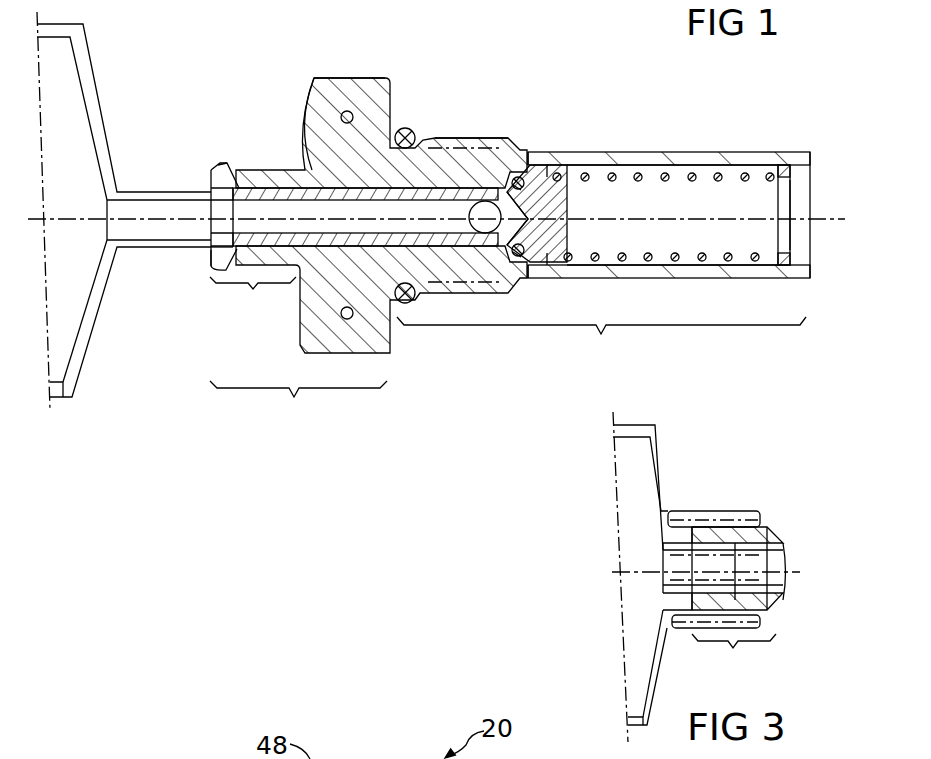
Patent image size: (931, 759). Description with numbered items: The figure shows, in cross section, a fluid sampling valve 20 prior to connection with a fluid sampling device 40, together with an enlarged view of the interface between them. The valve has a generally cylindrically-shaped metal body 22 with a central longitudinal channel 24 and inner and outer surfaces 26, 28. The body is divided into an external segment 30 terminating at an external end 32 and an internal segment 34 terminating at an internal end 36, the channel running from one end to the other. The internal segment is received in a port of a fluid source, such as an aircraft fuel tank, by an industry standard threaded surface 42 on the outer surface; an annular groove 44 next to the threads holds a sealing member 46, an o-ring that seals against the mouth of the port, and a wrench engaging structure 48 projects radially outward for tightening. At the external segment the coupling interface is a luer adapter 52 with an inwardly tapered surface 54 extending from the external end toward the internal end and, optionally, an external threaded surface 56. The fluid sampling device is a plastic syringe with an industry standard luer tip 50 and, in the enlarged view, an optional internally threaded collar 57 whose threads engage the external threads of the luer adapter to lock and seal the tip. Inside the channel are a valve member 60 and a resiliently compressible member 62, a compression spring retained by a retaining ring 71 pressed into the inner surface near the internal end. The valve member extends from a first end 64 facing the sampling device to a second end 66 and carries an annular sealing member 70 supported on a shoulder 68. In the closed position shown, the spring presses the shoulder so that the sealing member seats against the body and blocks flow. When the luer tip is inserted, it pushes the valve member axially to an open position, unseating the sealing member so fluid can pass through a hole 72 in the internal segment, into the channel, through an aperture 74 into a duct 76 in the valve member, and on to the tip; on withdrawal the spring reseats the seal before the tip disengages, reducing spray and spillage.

In FIG. 1, the fluid sampling valve 20 is at (523, 76).
In FIG. 1, the body 22 is at (293, 162).
In FIG. 1, the central longitudinal channel 24 is at (654, 184).
In FIG. 1, the inner surface 26 is at (587, 172).
In FIG. 1, the outer surface 28 is at (648, 152).
In FIG. 1, the external segment 30 is at (298, 406).
In FIG. 1, the external end 32 is at (210, 263).
In FIG. 1, the internal segment 34 is at (601, 341).
In FIG. 1, the internal end 36 is at (810, 157).
In FIG. 1, the fluid sampling device 40 is at (100, 97).
In FIG. 3, the fluid sampling device 40 is at (659, 430).
In FIG. 1, the threaded surface 42 is at (462, 138).
In FIG. 1, the annular groove 44 is at (424, 147).
In FIG. 1, the sealing member 46 is at (410, 292).
In FIG. 1, the wrench engaging structure 48 is at (360, 78).
In FIG. 1, the luer tip 50 is at (167, 193).
In FIG. 3, the luer tip 50 is at (678, 543).
In FIG. 1, the luer adapter 52 is at (253, 300).
In FIG. 3, the luer adapter 52 is at (734, 656).
In FIG. 1, the inwardly tapered surface 54 is at (240, 188).
In FIG. 1, the external threaded surface 56 is at (223, 170).
In FIG. 3, the external threaded surface 56 is at (700, 527).
In FIG. 3, the internally threaded collar 57 is at (699, 513).
In FIG. 1, the valve member 60 is at (492, 188).
In FIG. 3, the valve member 60 is at (788, 545).
In FIG. 1, the resiliently compressible member 62 is at (723, 260).
In FIG. 1, the first end 64 is at (207, 246).
In FIG. 1, the second end 66 is at (568, 200).
In FIG. 1, the shoulder 68 is at (519, 262).
In FIG. 1, the annular sealing member 70 is at (525, 170).
In FIG. 1, the retaining ring 71 is at (790, 240).
In FIG. 1, the hole 72 is at (553, 162).
In FIG. 1, the aperture 74 is at (486, 222).
In FIG. 1, the duct 76 is at (302, 78).